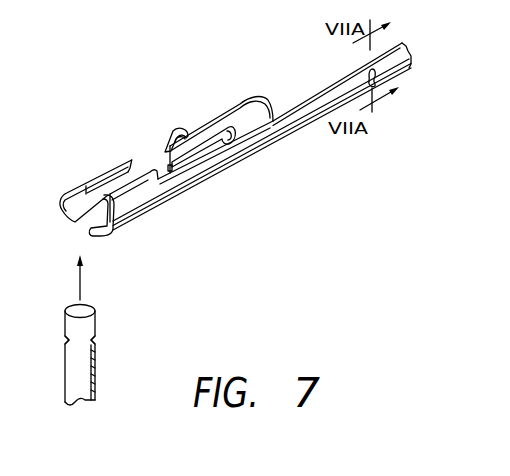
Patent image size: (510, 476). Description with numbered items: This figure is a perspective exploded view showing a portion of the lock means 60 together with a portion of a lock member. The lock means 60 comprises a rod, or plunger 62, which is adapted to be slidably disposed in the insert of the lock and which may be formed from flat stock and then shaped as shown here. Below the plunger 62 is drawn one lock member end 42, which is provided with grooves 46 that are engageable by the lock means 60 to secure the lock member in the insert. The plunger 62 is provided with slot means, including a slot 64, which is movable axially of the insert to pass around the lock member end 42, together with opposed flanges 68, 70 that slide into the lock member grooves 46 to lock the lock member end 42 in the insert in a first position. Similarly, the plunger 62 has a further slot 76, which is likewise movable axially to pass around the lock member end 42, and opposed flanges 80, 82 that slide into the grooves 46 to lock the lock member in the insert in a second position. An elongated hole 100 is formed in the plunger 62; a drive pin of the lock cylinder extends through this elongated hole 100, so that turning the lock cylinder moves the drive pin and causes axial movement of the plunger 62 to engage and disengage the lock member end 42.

The lock member end 42 is at (101, 315).
The groove 46 is at (62, 340).
The lock means 60 is at (113, 128).
The plunger 62 is at (395, 49).
The slot 64 is at (91, 230).
The flange 68 is at (105, 173).
The flange 70 is at (140, 188).
The slot 76 is at (226, 147).
The flange 80 is at (167, 162).
The flange 82 is at (172, 142).
The elongated hole 100 is at (380, 78).